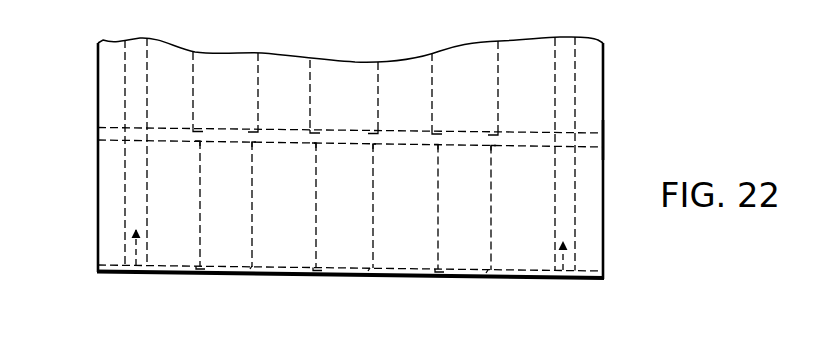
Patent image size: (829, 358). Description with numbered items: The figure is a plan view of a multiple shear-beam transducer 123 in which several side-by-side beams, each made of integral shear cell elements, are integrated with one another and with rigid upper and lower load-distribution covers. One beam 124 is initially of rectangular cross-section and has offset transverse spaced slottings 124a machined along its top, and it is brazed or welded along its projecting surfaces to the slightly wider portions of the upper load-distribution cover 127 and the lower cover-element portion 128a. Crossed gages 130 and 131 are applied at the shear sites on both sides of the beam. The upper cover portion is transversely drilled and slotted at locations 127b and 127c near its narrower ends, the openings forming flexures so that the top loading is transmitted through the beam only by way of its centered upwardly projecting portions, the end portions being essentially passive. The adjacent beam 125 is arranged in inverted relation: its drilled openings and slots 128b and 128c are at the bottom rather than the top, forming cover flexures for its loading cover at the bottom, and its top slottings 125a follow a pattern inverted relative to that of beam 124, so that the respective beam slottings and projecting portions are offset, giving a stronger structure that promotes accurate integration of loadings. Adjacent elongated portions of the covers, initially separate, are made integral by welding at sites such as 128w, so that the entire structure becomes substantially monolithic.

The multiple shear-beam transducer 123 is at (738, 88).
The beam 124 is at (112, 191).
The top transverse spaced slottings 124a is at (407, 212).
The beam 125 is at (118, 86).
The top slottings of beam 125 125a is at (233, 112).
The upper load-distribution cover 127 is at (451, 73).
The drilled and slotted location 127b is at (146, 343).
The drilled and slotted location 127c is at (562, 279).
The lower cover-element portion 128a is at (145, 13).
The drilled opening and slot 128b is at (100, 42).
The drilled opening and slot 128c is at (564, 85).
The welding site 128w is at (686, 149).
The crossed gage 130 is at (352, 275).
The crossed gage 131 is at (363, 137).